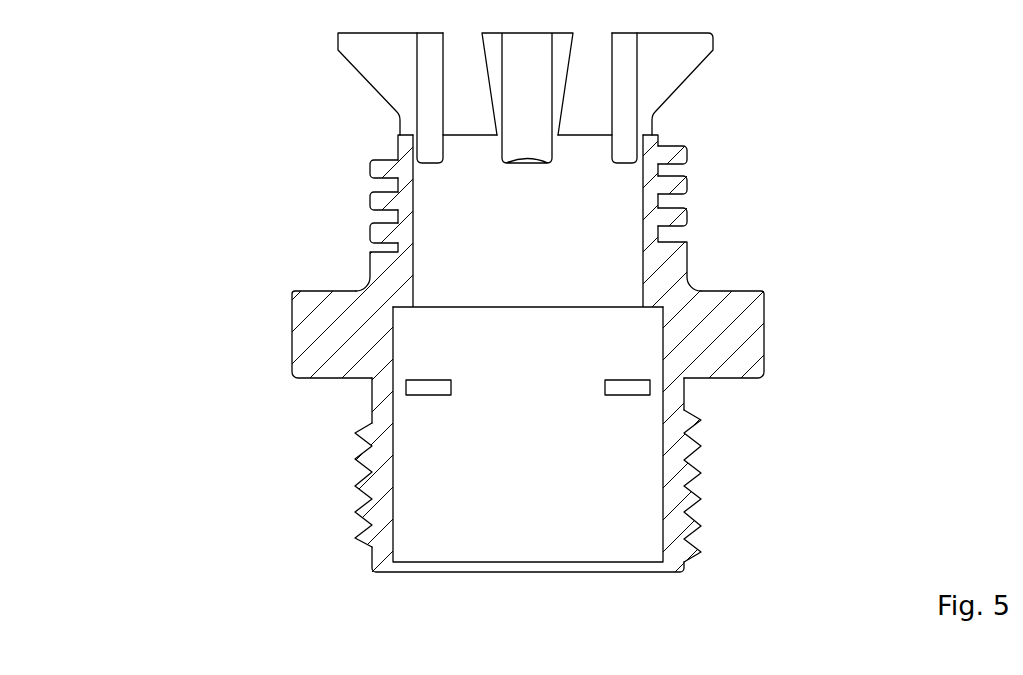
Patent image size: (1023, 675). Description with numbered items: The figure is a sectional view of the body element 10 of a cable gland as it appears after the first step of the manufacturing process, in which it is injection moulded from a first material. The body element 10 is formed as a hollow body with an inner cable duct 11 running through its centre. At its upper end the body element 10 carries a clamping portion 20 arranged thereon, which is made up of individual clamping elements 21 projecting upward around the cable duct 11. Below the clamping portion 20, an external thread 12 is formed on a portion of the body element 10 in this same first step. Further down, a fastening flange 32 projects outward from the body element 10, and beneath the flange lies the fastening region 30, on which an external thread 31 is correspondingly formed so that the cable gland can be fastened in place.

The body element 10 is at (647, 258).
The inner cable duct 11 is at (457, 212).
The external thread 12 is at (367, 232).
The clamping portion 20 is at (647, 95).
The clamping elements 21 is at (620, 62).
The fastening region 30 is at (370, 435).
The external thread 31 is at (360, 487).
The fastening flange 32 is at (303, 350).